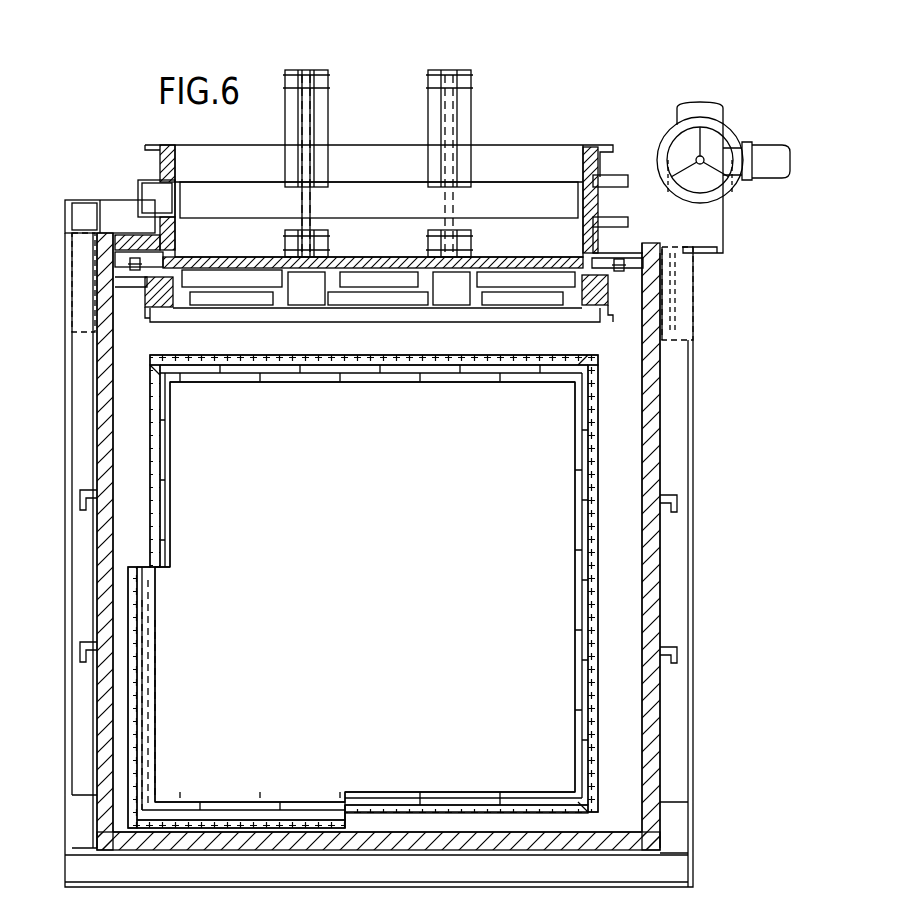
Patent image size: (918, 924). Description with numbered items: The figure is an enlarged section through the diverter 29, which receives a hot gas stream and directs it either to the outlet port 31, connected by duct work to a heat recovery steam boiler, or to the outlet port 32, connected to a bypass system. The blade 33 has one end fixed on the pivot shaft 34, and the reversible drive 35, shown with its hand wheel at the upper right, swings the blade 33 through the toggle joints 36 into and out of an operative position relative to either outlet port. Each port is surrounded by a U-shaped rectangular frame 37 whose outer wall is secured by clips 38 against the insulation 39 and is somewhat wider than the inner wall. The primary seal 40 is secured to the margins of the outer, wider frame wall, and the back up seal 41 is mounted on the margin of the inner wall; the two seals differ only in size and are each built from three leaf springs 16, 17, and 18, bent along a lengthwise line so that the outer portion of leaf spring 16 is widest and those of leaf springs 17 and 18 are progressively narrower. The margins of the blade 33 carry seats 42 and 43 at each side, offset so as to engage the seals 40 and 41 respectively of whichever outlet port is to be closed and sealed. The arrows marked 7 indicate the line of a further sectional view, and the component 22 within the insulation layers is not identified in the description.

The section line of FIG. 7 is at (362, 32).
The leaf spring 16 is at (212, 392).
The leaf spring 17 is at (166, 527).
The leaf spring 18 is at (160, 510).
The insulating layer 22 is at (157, 480).
The diverter 29 is at (700, 443).
The outlet port 31 is at (370, 604).
The outlet port 32 is at (242, 238).
The blade 33 is at (388, 258).
The pivot shaft 34 is at (537, 182).
The reversible drive 35 is at (725, 113).
The toggle joints 36 is at (328, 98).
The frame 37 is at (110, 262).
The clips 38 is at (122, 247).
The insulation 39 is at (152, 257).
The primary seal 40 is at (147, 257).
The back up seal 41 is at (133, 267).
The seat 42 is at (148, 318).
The seat 43 is at (168, 320).